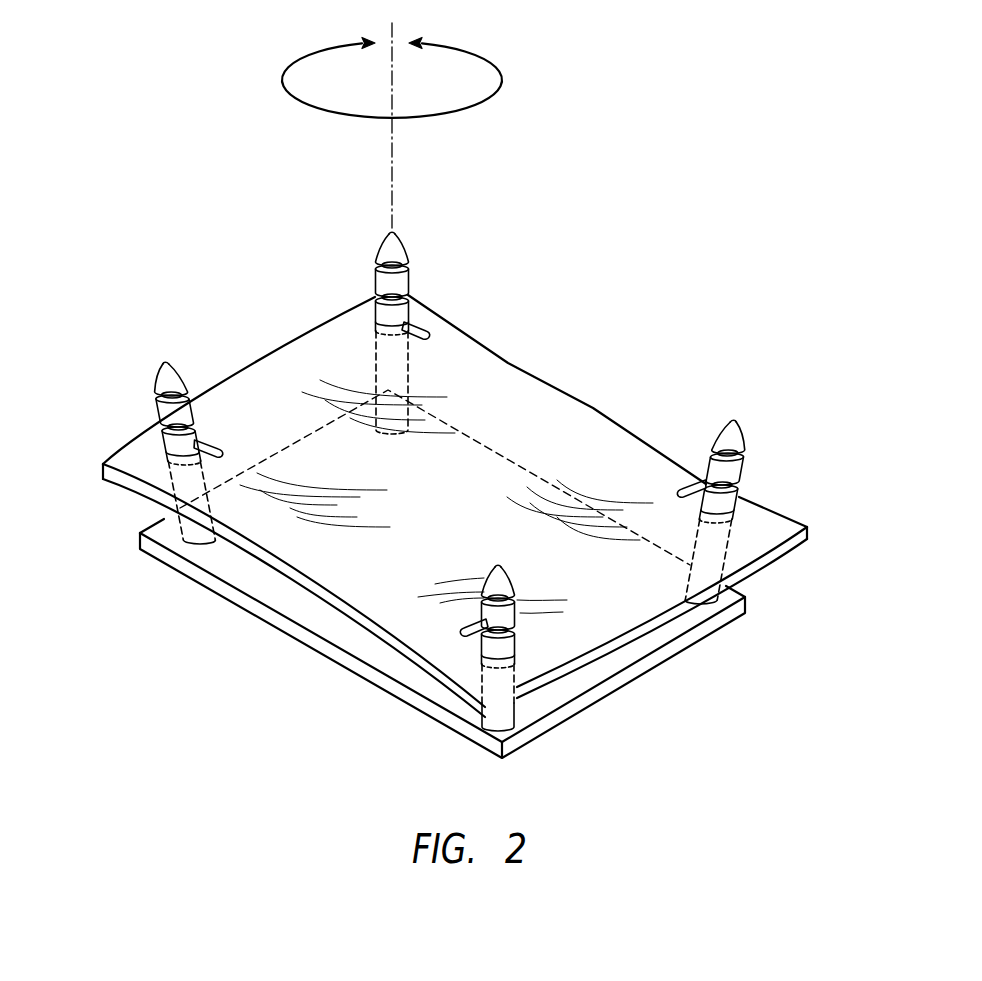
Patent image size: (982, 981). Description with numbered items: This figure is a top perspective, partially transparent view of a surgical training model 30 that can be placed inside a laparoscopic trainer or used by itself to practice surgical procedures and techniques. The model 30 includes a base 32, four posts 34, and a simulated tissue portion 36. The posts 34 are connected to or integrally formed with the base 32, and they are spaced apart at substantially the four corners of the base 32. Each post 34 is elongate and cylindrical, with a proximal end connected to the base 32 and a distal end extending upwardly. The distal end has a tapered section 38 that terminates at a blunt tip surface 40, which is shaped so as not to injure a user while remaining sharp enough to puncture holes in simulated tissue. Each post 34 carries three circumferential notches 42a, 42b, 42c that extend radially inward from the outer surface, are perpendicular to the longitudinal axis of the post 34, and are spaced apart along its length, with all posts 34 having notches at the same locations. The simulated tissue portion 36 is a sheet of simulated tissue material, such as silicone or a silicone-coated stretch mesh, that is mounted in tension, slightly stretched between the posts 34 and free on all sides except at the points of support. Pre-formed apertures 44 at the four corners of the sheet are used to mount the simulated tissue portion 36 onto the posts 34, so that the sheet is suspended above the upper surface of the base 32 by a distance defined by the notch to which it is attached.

The surgical training model 30 is at (643, 313).
The base 32 is at (695, 634).
The post 34 is at (398, 250).
The simulated tissue portion 36 is at (593, 408).
The tapered section 38 is at (379, 256).
The blunt tip surface 40 is at (390, 229).
The notch 42a is at (408, 278).
The notch 42b is at (408, 297).
The notch 42c is at (405, 327).
The pre-formed aperture 44 is at (427, 328).